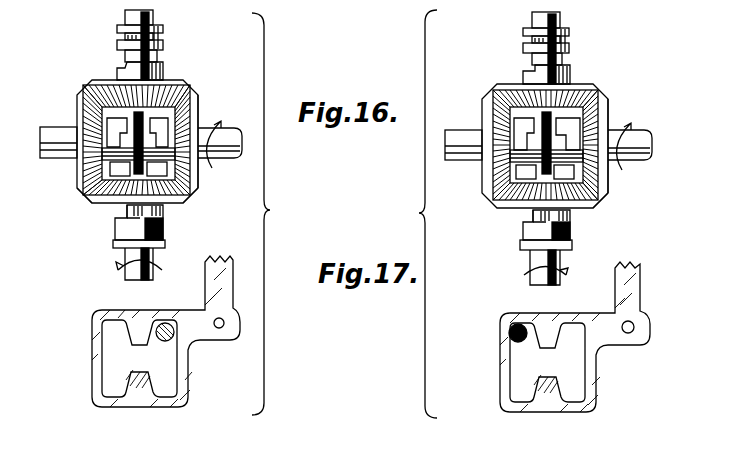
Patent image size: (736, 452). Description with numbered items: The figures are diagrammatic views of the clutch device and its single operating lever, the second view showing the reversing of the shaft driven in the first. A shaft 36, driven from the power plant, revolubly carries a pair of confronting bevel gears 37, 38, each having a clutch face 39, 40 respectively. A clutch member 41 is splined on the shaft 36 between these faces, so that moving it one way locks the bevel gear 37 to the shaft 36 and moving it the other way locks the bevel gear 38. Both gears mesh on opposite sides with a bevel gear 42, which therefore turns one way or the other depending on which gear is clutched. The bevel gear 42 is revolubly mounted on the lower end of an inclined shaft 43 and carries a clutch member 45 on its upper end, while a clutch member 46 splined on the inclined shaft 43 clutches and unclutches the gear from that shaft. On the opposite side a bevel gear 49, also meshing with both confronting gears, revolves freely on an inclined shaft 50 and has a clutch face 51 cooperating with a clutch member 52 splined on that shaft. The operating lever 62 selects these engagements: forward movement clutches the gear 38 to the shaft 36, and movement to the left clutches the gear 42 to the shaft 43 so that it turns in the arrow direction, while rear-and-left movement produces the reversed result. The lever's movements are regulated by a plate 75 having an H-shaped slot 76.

In FIG. 16, the shaft 36 is at (238, 142).
In FIG. 17, the shaft 36 is at (645, 150).
In FIG. 16, the bevel gear 37 is at (200, 104).
In FIG. 17, the bevel gear 37 is at (600, 118).
In FIG. 16, the bevel gear 38 is at (85, 110).
In FIG. 17, the bevel gear 38 is at (492, 107).
In FIG. 16, the clutch face 39 is at (198, 180).
In FIG. 17, the clutch face 39 is at (570, 144).
In FIG. 16, the clutch face 40 is at (113, 145).
In FIG. 17, the clutch face 40 is at (520, 143).
In FIG. 16, the clutch member 41 is at (148, 160).
In FIG. 17, the clutch member 41 is at (560, 160).
In FIG. 16, the bevel gear 42 is at (182, 208).
In FIG. 17, the bevel gear 42 is at (598, 210).
In FIG. 16, the inclined shaft 43 is at (126, 280).
In FIG. 17, the inclined shaft 43 is at (536, 262).
In FIG. 16, the clutch member 45 is at (128, 215).
In FIG. 17, the clutch member 45 is at (530, 218).
In FIG. 16, the clutch member 46 is at (128, 228).
In FIG. 17, the clutch member 46 is at (572, 238).
In FIG. 16, the bevel gear 49 is at (165, 88).
In FIG. 17, the bevel gear 49 is at (510, 88).
In FIG. 16, the inclined shaft 50 is at (125, 17).
In FIG. 17, the inclined shaft 50 is at (560, 18).
In FIG. 16, the clutch face 51 is at (117, 69).
In FIG. 17, the clutch face 51 is at (530, 66).
In FIG. 16, the clutch member 52 is at (163, 28).
In FIG. 17, the clutch member 52 is at (570, 46).
In FIG. 16, the operating lever 62 is at (180, 345).
In FIG. 17, the operating lever 62 is at (510, 330).
In FIG. 16, the plate 75 is at (186, 390).
In FIG. 17, the plate 75 is at (596, 377).
In FIG. 16, the H-shaped slot 76 is at (106, 350).
In FIG. 17, the H-shaped slot 76 is at (518, 358).